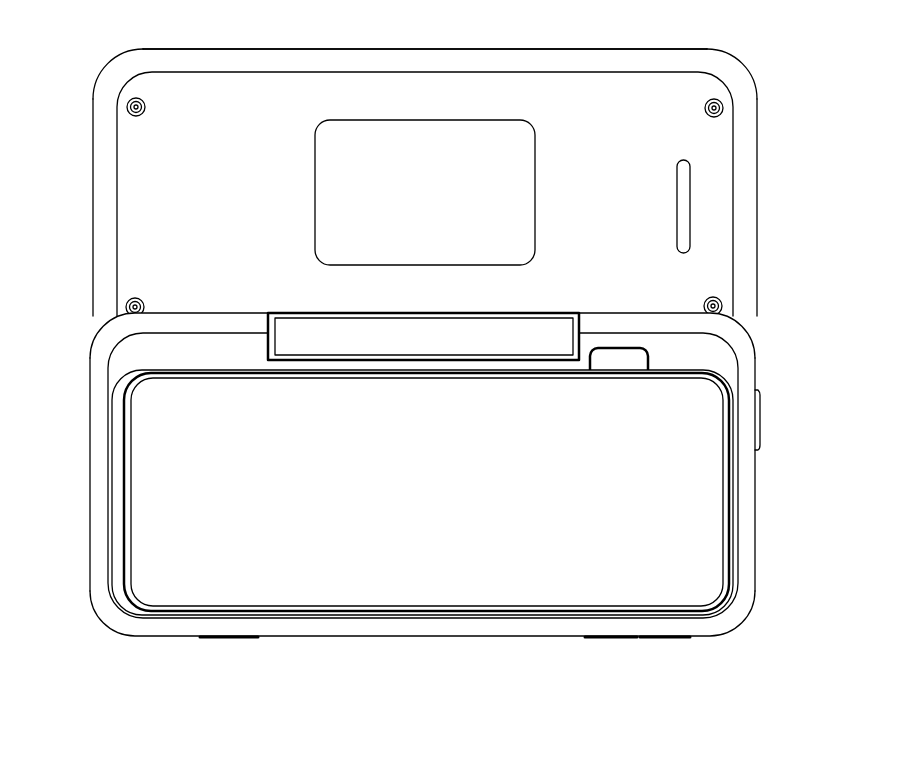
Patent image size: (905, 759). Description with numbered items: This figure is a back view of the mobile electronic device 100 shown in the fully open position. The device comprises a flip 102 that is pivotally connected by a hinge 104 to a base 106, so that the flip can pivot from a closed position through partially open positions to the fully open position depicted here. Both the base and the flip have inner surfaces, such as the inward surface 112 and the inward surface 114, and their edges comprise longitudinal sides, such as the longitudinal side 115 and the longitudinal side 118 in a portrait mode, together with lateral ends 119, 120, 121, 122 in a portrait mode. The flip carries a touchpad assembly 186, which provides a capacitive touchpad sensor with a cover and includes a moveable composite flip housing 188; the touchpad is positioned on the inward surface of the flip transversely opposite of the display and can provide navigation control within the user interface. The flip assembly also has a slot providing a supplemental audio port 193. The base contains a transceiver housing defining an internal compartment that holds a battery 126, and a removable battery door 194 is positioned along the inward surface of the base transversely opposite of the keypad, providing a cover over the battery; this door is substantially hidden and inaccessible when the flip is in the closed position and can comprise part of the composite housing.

The mobile electronic device 100 is at (86, 343).
The flip 102 is at (731, 57).
The hinge 104 is at (512, 318).
The base 106 is at (738, 618).
The inward surface 112 is at (761, 403).
The inward surface 114 is at (713, 135).
The longitudinal side 115 is at (620, 641).
The longitudinal side 118 is at (552, 48).
The lateral end 119 is at (757, 474).
The lateral end 120 is at (757, 208).
The lateral end 121 is at (93, 205).
The lateral end 122 is at (90, 526).
The battery 126 is at (757, 84).
The touchpad assembly 186 is at (322, 190).
The composite flip housing 188 is at (405, 58).
The supplemental audio port 193 is at (676, 181).
The removable battery door 194 is at (703, 564).